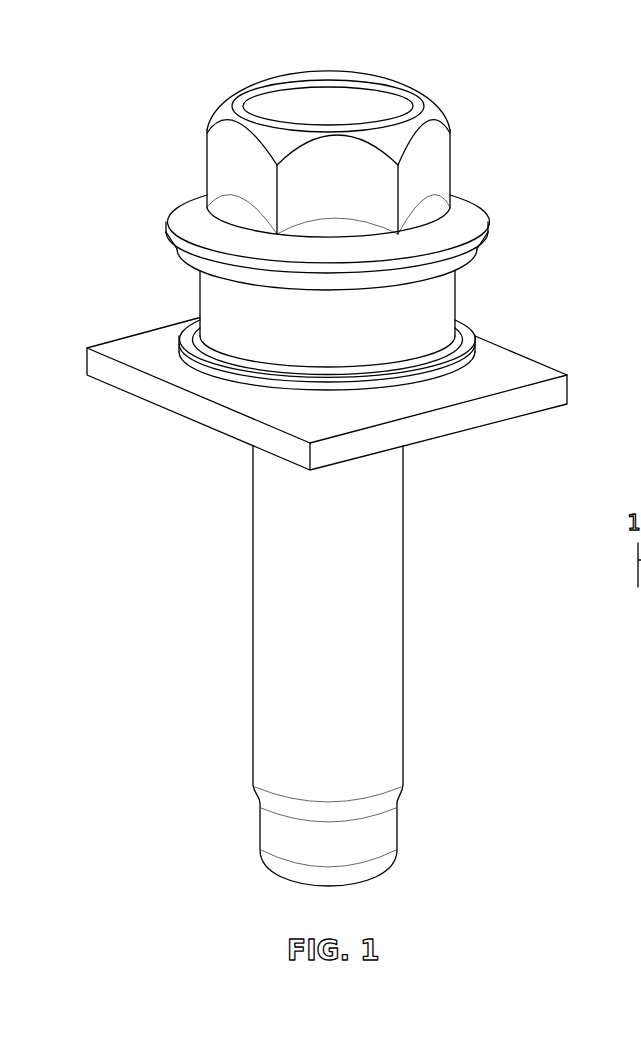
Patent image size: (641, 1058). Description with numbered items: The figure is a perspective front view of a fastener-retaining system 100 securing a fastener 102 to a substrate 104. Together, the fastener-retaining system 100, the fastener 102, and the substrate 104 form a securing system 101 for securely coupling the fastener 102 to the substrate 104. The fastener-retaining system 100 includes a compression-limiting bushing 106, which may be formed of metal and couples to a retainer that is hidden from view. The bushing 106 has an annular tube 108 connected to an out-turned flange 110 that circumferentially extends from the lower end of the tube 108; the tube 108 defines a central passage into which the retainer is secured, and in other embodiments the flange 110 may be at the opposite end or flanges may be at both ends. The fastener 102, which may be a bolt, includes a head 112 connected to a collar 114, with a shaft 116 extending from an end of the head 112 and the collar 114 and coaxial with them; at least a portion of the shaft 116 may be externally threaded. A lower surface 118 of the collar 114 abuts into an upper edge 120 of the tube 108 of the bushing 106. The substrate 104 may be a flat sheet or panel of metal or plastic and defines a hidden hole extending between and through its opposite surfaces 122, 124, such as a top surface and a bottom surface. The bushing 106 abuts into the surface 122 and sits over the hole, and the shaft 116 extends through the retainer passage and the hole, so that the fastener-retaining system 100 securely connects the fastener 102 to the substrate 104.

The fastener-retaining system 100 is at (353, 219).
The securing system 101 is at (350, 464).
The fastener 102 is at (381, 666).
The substrate 104 is at (359, 394).
The compression-limiting bushing 106 is at (215, 296).
The annular tube 108 is at (457, 308).
The out-turned flange 110 is at (473, 355).
The head 112 is at (450, 122).
The collar 114 is at (470, 208).
The shaft 116 is at (402, 497).
The lower surface 118 is at (488, 270).
The upper edge 120 is at (210, 277).
The surface 122 is at (550, 366).
The surface 124 is at (535, 412).